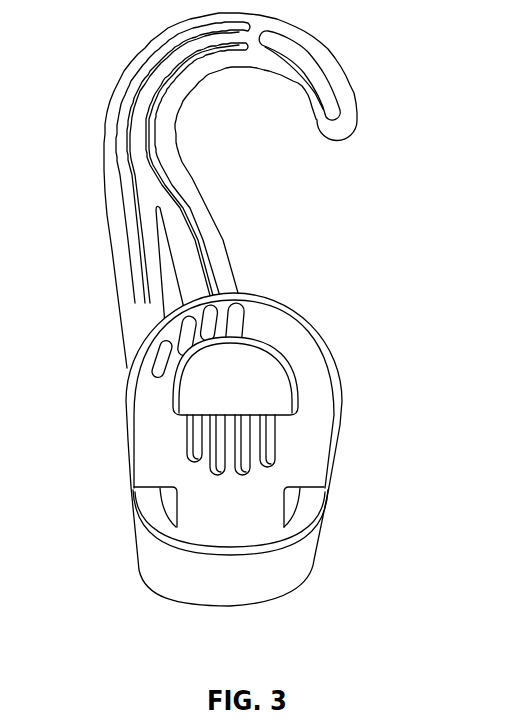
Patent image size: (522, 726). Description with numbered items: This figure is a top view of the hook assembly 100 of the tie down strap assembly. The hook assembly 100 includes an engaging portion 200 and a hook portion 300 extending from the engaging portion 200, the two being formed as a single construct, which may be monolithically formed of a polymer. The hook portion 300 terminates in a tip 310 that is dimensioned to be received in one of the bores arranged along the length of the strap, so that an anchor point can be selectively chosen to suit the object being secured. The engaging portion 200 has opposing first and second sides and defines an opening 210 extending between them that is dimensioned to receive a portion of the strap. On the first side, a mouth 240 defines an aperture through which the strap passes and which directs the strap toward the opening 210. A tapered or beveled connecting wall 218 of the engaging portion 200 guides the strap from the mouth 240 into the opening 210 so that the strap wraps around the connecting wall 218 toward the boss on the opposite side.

The hook assembly 100 is at (430, 228).
The hook portion 300 is at (124, 72).
The tip 310 is at (352, 125).
The engaging portion 200 is at (150, 452).
The opening 210 is at (253, 367).
The connecting wall 218 is at (282, 436).
The mouth 240 is at (305, 560).